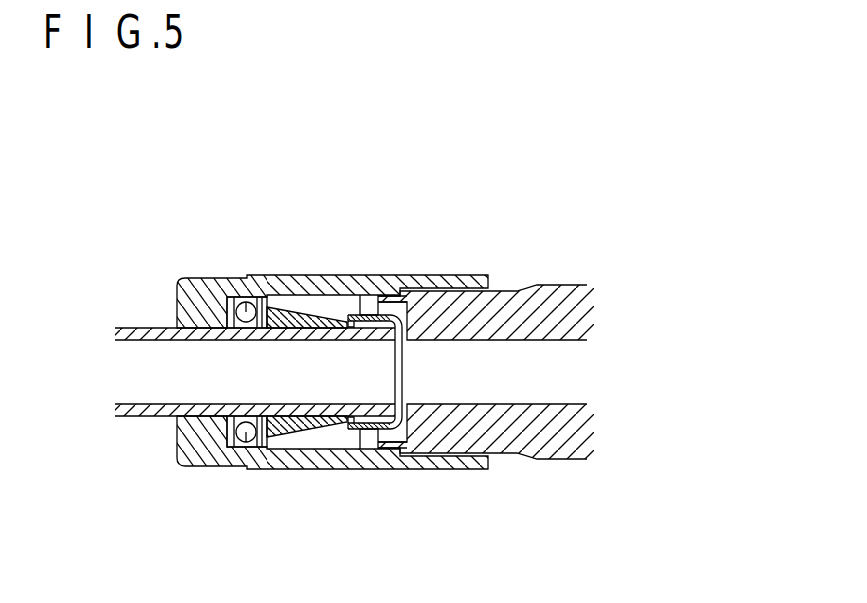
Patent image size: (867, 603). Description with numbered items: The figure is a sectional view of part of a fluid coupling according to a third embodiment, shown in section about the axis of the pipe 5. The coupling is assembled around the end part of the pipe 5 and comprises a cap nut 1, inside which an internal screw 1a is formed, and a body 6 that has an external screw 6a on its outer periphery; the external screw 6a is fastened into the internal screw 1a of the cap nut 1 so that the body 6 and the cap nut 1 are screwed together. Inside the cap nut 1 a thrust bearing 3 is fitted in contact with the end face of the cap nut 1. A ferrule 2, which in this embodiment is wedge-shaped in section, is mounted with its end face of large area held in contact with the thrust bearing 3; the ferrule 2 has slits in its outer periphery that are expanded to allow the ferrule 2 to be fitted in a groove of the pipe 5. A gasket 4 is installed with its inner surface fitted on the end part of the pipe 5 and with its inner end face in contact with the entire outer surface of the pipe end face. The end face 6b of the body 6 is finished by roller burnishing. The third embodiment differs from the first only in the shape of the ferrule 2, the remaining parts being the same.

The cap nut 1 is at (178, 279).
The internal screw 1a is at (383, 276).
The ferrule 2 is at (296, 432).
The thrust bearing 3 is at (241, 277).
The gasket 4 is at (355, 277).
The pipe 5 is at (150, 410).
The body 6 is at (572, 285).
The external screw 6a is at (512, 291).
The end face 6b is at (388, 470).